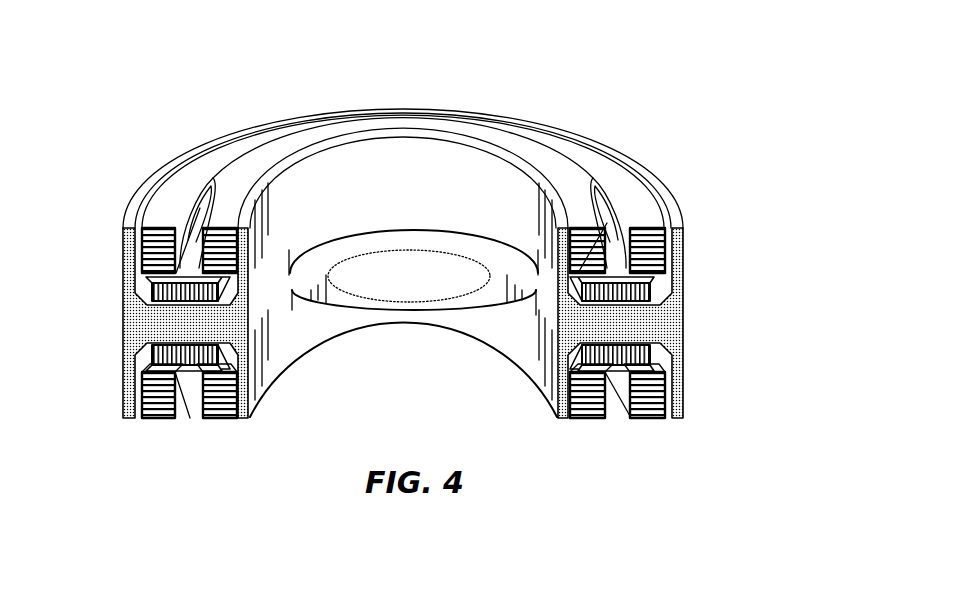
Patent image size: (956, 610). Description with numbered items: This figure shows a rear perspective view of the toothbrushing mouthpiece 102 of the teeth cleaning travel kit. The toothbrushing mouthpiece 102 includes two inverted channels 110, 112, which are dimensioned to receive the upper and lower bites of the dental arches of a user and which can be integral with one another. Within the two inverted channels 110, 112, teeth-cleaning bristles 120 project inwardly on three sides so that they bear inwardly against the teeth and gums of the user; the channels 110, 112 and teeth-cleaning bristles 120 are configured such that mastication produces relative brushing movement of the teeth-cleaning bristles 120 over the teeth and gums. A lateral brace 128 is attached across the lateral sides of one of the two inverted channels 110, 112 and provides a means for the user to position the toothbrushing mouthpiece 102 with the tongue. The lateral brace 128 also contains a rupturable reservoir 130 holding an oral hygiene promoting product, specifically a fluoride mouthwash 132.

The toothbrushing mouthpiece 102 is at (437, 298).
The inverted channel 110 is at (687, 298).
The inverted channel 112 is at (641, 451).
The teeth-cleaning bristles 120 is at (587, 250).
The lateral brace 128 is at (403, 228).
The rupturable reservoir 130 is at (432, 252).
The fluoride mouthwash 132 is at (398, 275).